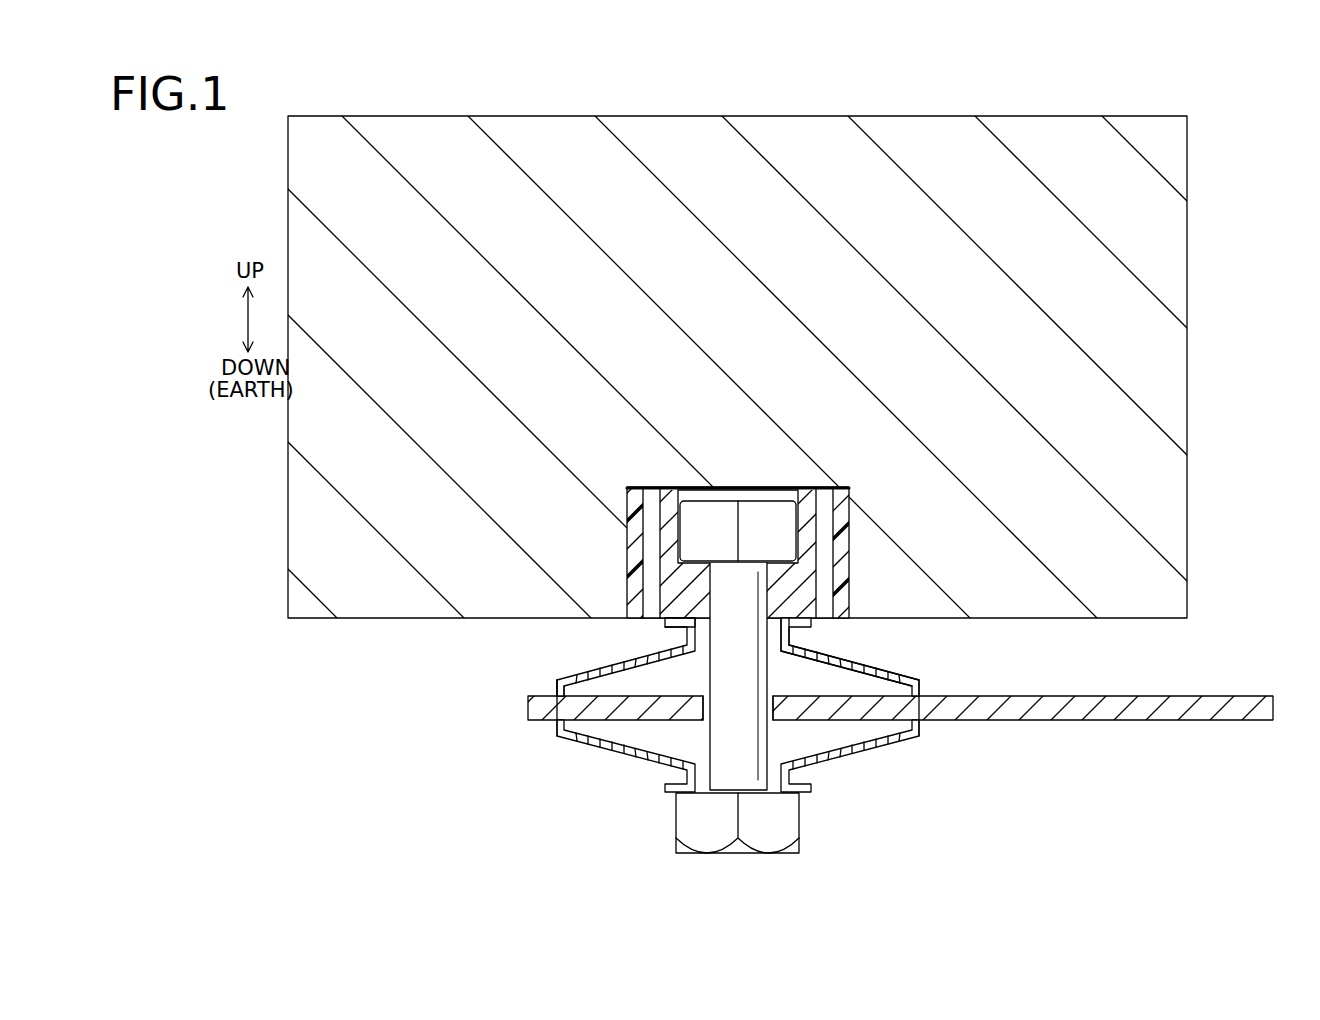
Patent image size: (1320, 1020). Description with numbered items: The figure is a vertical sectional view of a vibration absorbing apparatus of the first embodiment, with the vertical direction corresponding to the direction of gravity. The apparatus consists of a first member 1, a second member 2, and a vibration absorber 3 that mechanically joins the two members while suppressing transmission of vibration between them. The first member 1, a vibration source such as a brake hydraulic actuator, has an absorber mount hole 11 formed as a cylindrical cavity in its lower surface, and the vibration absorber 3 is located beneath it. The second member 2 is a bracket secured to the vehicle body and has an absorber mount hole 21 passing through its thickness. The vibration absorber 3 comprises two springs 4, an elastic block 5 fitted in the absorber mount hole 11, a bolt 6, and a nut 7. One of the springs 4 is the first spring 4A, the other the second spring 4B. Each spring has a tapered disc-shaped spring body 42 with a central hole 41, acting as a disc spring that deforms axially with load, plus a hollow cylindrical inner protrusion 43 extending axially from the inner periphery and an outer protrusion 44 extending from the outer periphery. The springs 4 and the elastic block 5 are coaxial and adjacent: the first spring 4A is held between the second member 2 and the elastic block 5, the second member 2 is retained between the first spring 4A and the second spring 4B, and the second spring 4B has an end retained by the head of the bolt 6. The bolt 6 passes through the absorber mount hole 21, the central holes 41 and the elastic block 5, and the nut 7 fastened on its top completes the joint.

The first member 1 is at (1157, 265).
The second member 2 is at (1200, 710).
The absorber mount hole 21 is at (773, 718).
The vibration absorber 3 is at (589, 758).
The springs 4 is at (689, 710).
The first spring 4A is at (593, 671).
The second spring 4B is at (655, 764).
The central hole 41 is at (772, 655).
The spring body 42 is at (877, 668).
The inner protrusion 43 is at (687, 634).
The outer protrusion 44 is at (557, 683).
The elastic block 5 is at (670, 576).
The bolt 6 is at (690, 824).
The nut 7 is at (782, 527).
The absorber mount hole 11 is at (850, 576).